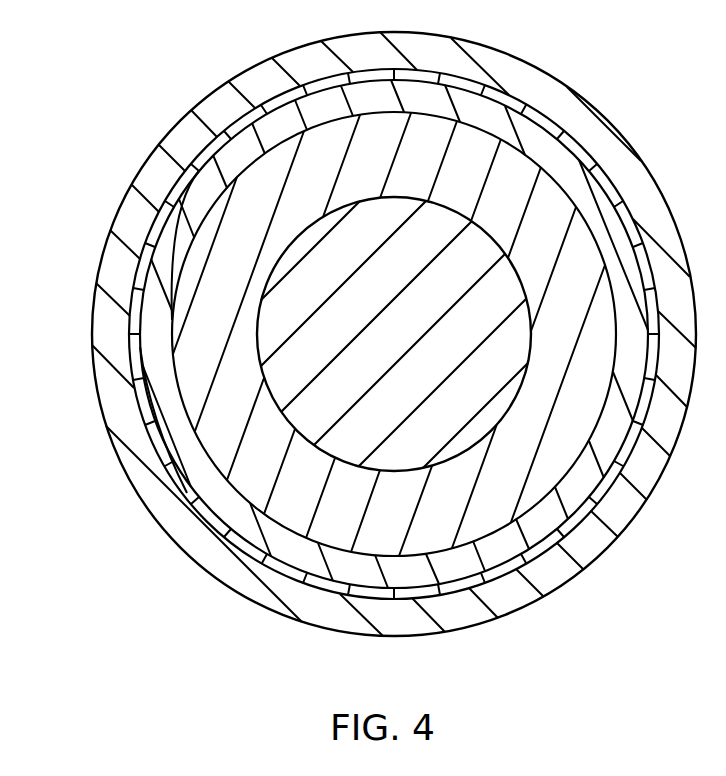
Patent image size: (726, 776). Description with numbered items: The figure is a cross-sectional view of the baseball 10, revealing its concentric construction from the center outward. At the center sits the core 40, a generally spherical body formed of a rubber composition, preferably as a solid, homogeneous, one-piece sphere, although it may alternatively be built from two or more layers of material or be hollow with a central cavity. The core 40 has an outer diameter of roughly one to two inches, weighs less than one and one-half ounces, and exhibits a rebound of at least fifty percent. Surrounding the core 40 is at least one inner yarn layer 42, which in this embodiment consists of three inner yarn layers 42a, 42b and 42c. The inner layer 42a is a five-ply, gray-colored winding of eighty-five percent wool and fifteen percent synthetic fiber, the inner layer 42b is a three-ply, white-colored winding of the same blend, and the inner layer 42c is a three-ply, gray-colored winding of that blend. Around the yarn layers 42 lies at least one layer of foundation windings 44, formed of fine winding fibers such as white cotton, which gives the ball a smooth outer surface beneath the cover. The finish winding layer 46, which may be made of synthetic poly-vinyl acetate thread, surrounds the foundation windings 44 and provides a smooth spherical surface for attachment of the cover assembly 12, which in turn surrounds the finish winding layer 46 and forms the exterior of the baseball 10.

The baseball 10 is at (118, 62).
The cover assembly 12 is at (540, 78).
The core 40 is at (463, 263).
The inner yarn layer 42 is at (215, 437).
The inner layer 42a is at (193, 263).
The inner layer 42b is at (160, 352).
The inner layer 42c is at (150, 437).
The foundation windings 44 is at (463, 592).
The finish winding layer 46 is at (517, 595).